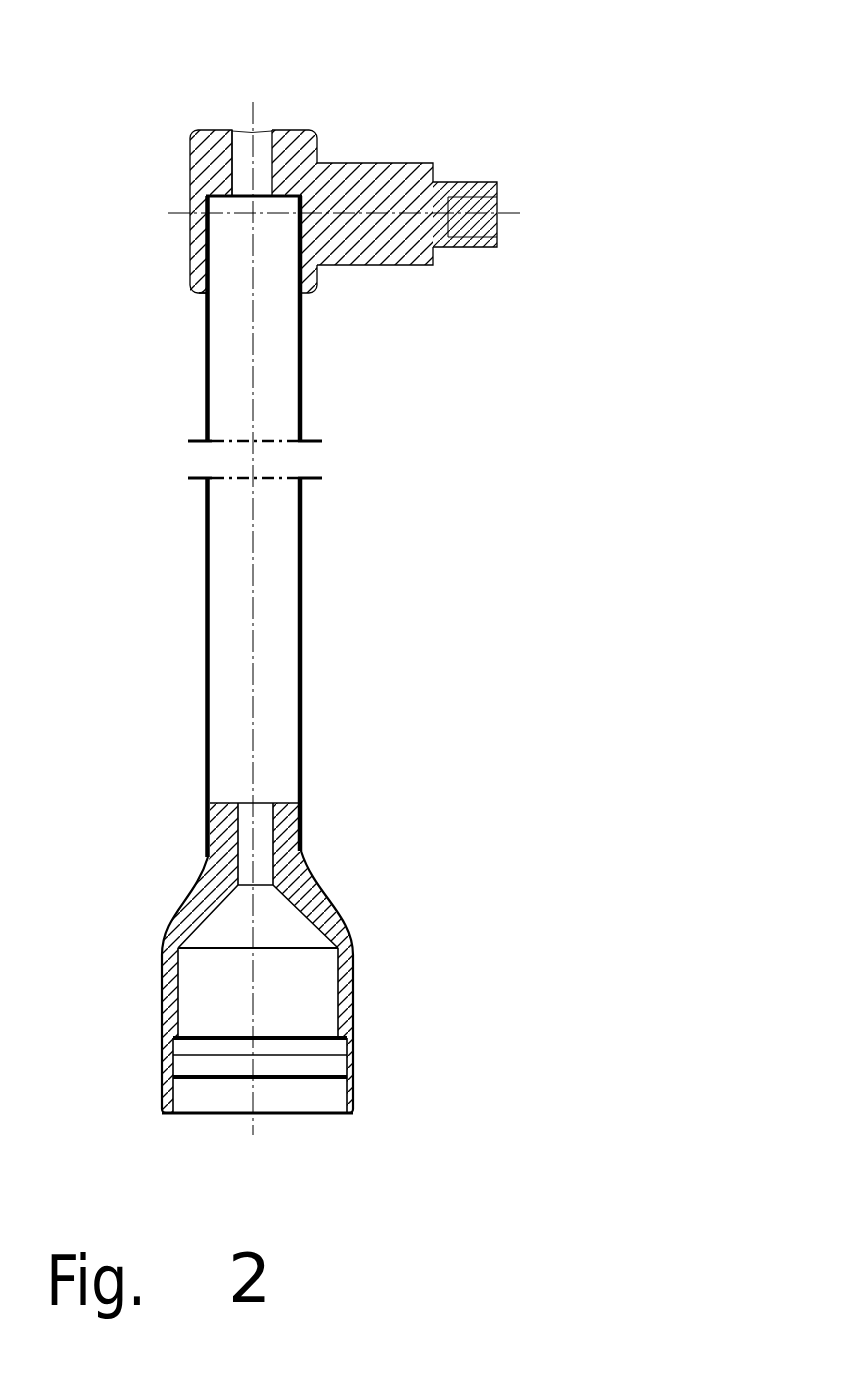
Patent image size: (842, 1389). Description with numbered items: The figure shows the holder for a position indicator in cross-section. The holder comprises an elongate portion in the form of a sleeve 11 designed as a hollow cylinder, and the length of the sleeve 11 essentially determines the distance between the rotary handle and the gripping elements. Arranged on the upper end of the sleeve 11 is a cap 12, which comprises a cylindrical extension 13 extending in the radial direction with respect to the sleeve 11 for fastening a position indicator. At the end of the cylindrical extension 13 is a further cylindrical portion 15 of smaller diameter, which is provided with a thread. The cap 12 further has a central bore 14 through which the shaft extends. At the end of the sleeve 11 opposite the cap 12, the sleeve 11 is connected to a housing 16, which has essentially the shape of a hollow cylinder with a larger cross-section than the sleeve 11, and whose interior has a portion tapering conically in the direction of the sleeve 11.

The sleeve 11 is at (297, 600).
The cap 12 is at (208, 163).
The cylindrical extension 13 is at (377, 255).
The central bore 14 is at (263, 155).
The cylindrical portion 15 is at (475, 184).
The housing 16 is at (322, 917).